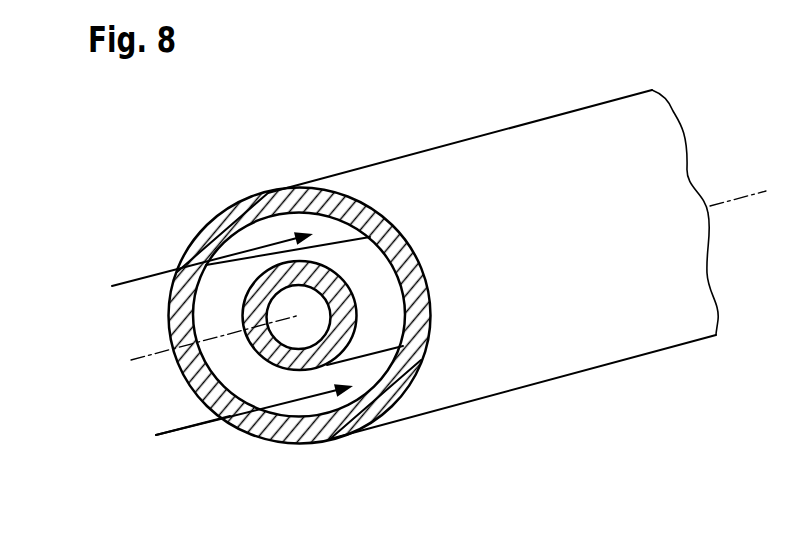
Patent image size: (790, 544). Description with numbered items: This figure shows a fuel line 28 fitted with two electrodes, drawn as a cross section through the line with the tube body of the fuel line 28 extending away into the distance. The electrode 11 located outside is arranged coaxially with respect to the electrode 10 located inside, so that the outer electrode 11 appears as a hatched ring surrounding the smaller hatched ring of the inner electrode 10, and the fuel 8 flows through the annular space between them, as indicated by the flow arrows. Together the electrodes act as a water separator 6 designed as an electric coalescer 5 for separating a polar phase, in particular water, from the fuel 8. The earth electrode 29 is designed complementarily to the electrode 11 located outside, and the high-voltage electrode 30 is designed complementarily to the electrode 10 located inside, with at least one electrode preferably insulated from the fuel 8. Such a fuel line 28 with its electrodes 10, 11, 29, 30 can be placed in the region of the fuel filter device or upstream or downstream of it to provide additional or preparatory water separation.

The fuel line 28 is at (506, 117).
The electric coalescer 5 is at (302, 347).
The water separator 6 is at (342, 432).
The electrode located outside 11 is at (326, 331).
The high-voltage electrode 30 is at (410, 334).
The electrode located inside 10 is at (307, 225).
The earth electrode 29 is at (325, 287).
The fuel 8 is at (169, 427).